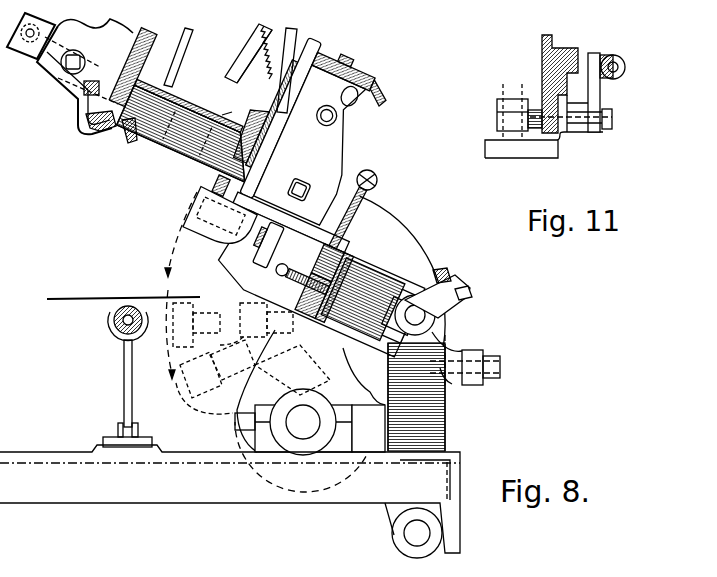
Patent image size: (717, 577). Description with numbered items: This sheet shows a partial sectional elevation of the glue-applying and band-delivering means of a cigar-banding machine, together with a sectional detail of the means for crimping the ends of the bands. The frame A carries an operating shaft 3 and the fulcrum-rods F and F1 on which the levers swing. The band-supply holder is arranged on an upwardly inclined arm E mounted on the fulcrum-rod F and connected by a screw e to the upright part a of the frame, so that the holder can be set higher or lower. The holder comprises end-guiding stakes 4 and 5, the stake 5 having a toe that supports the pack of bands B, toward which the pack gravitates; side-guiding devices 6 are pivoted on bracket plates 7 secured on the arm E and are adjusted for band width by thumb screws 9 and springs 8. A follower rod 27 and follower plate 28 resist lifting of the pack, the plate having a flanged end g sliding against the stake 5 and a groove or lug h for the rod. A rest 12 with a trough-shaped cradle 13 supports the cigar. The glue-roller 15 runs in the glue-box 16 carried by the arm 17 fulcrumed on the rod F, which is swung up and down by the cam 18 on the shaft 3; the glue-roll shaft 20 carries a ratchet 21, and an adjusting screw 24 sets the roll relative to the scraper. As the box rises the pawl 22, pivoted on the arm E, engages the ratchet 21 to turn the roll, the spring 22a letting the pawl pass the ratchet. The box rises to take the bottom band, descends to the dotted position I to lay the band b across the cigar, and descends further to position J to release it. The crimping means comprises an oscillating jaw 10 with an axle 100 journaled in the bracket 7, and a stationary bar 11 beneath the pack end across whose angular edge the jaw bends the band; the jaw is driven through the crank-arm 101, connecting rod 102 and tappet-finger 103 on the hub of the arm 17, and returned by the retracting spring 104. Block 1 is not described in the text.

In FIG. 8, the mounting block 1 is at (36, 38).
In FIG. 8, the operating shaft 3 is at (293, 422).
In FIG. 8, the end-guiding stake 4 is at (146, 36).
In FIG. 8, the end-guiding stake 5 is at (322, 48).
In FIG. 8, the side-guiding devices 6 is at (189, 30).
In FIG. 8, the bracket plates 7 is at (102, 42).
In FIG. 11, the bracket plates 7 is at (546, 53).
In FIG. 8, the springs 8 is at (337, 120).
In FIG. 8, the thumb screws 9 is at (376, 102).
In FIG. 8, the oscillating jaw 10 is at (112, 100).
In FIG. 11, the oscillating jaw 10 is at (500, 108).
In FIG. 8, the stationary bar 11 is at (130, 140).
In FIG. 11, the stationary bar 11 is at (513, 148).
In FIG. 8, the rest 12 is at (125, 380).
In FIG. 8, the cradle 13 is at (110, 323).
In FIG. 8, the glue-roller 15 is at (212, 184).
In FIG. 8, the glue-box 16 is at (222, 232).
In FIG. 8, the arm 17 is at (226, 258).
In FIG. 8, the cam 18 is at (368, 428).
In FIG. 8, the glue-roll shaft 20 is at (285, 236).
In FIG. 8, the ratchet 21 is at (372, 262).
In FIG. 8, the pawl 22 is at (366, 222).
In FIG. 8, the spring 22a is at (378, 180).
In FIG. 8, the adjusting screw 24 is at (287, 270).
In FIG. 8, the follower rod 27 is at (256, 46).
In FIG. 8, the follower plate 28 is at (165, 100).
In FIG. 11, the axle 100 is at (613, 120).
In FIG. 11, the crank-arm 101 is at (595, 60).
In FIG. 8, the connecting rod 102 is at (470, 292).
In FIG. 11, the connecting rod 102 is at (618, 77).
In FIG. 8, the tappet-finger 103 is at (457, 285).
In FIG. 11, the retracting spring 104 is at (625, 62).
In FIG. 8, the frame A is at (230, 499).
In FIG. 8, the pack of bands B is at (178, 128).
In FIG. 11, the pack of bands B is at (512, 107).
In FIG. 8, the arm E is at (402, 242).
In FIG. 11, the arm E is at (569, 48).
In FIG. 8, the fulcrum-rod F is at (418, 317).
In FIG. 8, the fulcrum-rod F1 is at (415, 534).
In FIG. 8, the dotted-line position I is at (224, 325).
In FIG. 8, the dotted-line position J is at (186, 410).
In FIG. 8, the upright part a is at (447, 400).
In FIG. 8, the band b is at (60, 298).
In FIG. 8, the screw e is at (500, 366).
In FIG. 8, the flanged end g is at (262, 118).
In FIG. 8, the groove or lug h is at (224, 118).